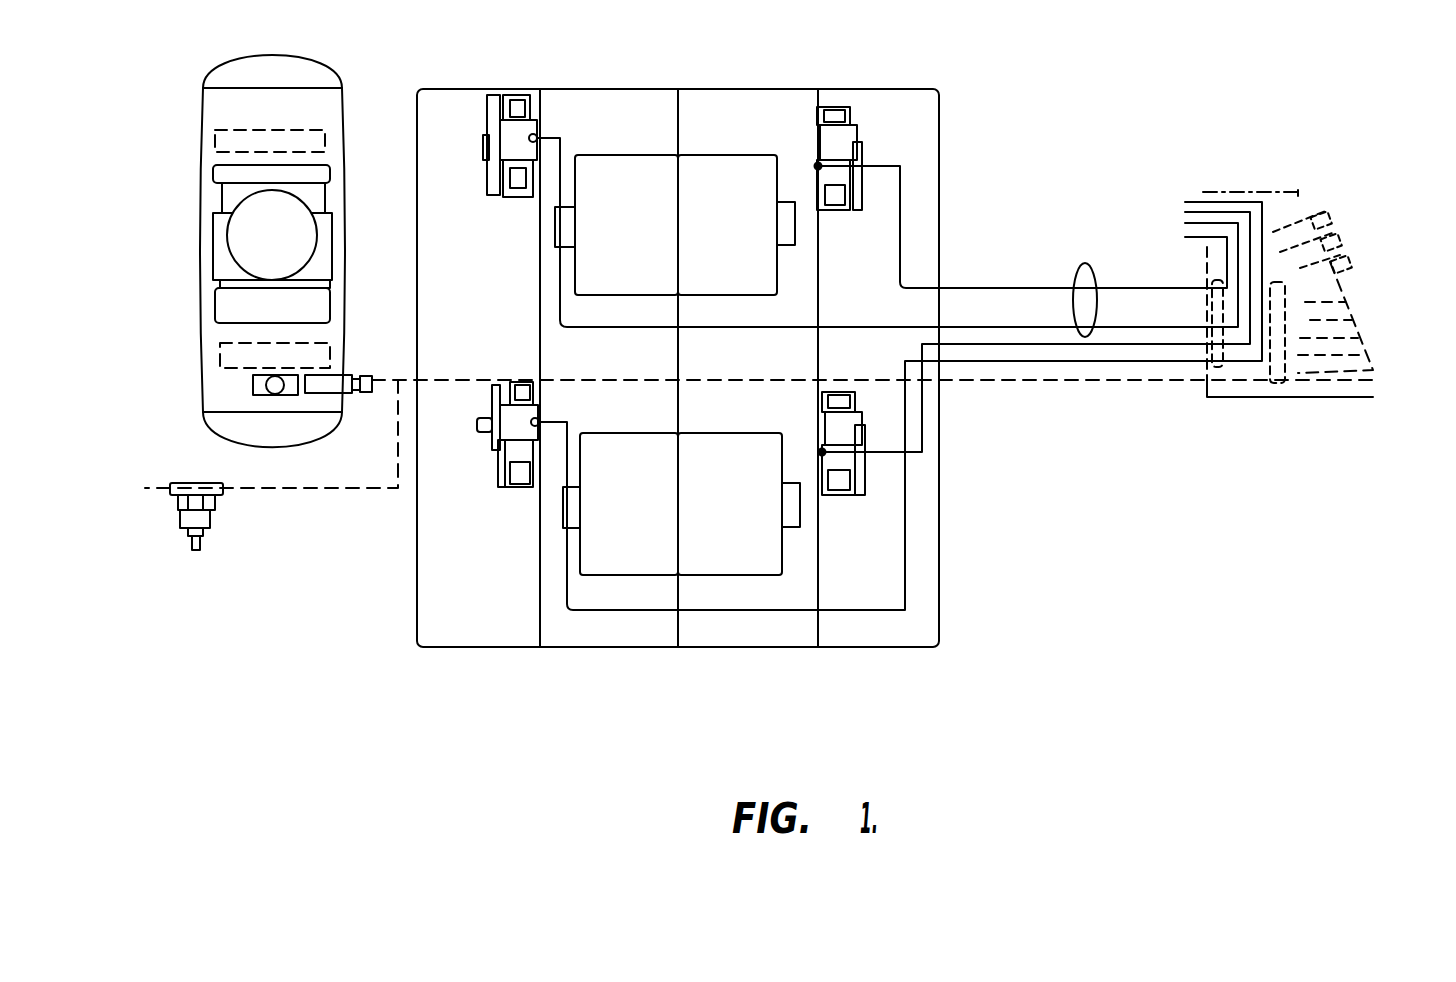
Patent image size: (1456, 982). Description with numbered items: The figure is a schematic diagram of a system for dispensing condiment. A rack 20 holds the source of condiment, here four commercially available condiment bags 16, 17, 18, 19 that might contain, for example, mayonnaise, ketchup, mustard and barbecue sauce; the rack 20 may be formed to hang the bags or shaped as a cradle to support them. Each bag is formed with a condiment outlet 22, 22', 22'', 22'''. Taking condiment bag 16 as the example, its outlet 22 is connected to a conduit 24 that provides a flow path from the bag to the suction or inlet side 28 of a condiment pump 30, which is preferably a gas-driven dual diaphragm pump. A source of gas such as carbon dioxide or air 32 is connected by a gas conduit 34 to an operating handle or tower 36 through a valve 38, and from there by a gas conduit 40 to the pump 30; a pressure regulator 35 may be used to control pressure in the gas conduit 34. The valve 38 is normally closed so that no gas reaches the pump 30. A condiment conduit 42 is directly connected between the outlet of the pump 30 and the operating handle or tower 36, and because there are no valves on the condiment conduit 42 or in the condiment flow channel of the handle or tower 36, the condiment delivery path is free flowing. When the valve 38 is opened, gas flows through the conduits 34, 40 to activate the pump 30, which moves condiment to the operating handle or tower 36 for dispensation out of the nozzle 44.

The condiment bag 16 is at (642, 274).
The condiment bag 17 is at (743, 212).
The condiment bag 18 is at (646, 551).
The condiment bag 19 is at (740, 487).
The rack 20 is at (678, 89).
The condiment outlet 22 is at (530, 240).
The condiment outlet 22' is at (827, 234).
The condiment outlet 22'' is at (526, 523).
The condiment outlet 22''' is at (836, 519).
The conduit 24 is at (563, 150).
The suction or inlet side 28 is at (535, 133).
The condiment pump 30 is at (488, 184).
The gas source 32 is at (341, 120).
The gas conduit 34 is at (470, 381).
The pressure regulator 35 is at (215, 510).
The operating handle or tower 36 is at (1385, 302).
The valve 38 is at (1340, 213).
The gas conduit 40 is at (1124, 327).
The condiment conduit 42 is at (1080, 266).
The nozzle 44 is at (1225, 200).